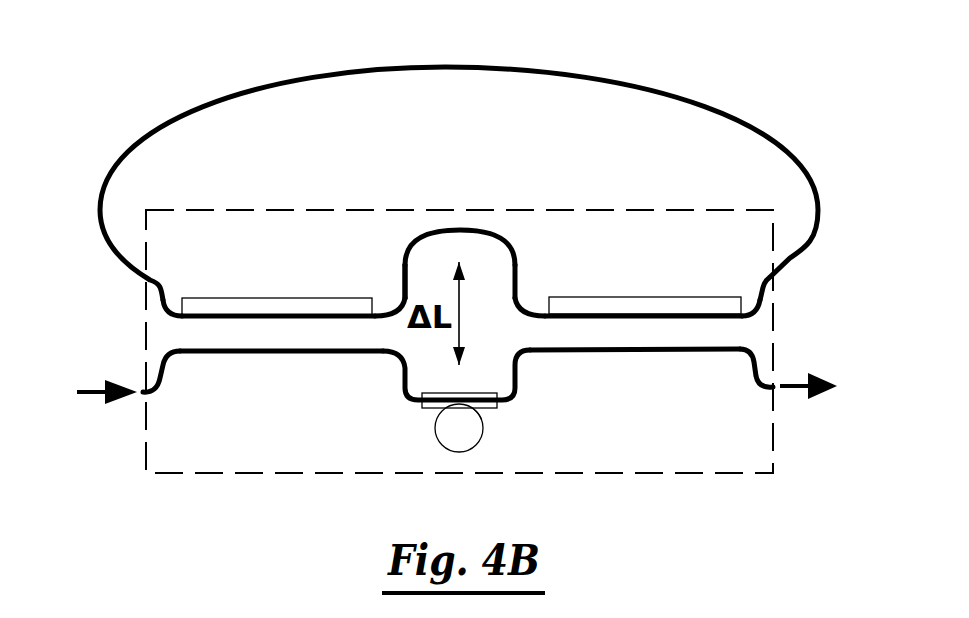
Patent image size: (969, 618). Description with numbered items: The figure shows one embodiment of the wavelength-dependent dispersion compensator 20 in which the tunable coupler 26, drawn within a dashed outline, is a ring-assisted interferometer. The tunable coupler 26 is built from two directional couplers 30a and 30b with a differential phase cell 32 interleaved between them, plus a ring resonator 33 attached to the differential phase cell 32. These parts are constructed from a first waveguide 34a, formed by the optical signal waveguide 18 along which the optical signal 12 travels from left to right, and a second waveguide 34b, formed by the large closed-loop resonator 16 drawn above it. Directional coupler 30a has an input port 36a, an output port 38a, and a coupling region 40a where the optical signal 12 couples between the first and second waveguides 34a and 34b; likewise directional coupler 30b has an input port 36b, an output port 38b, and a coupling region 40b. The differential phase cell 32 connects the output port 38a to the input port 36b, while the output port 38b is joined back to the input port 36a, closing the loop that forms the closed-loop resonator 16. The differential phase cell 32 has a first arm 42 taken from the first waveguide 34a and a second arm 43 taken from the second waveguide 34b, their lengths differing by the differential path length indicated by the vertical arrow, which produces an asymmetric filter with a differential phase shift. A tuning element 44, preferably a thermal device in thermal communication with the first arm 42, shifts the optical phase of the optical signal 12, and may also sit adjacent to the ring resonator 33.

The optical signal 12 is at (92, 387).
The closed-loop resonator 16 is at (782, 143).
The optical signal waveguide 18 is at (160, 392).
The wavelength-dependent dispersion compensator 20 is at (763, 72).
The tunable coupler 26 is at (710, 489).
The directional coupler 30a is at (247, 386).
The directional coupler 30b is at (638, 376).
The differential phase cell 32 is at (528, 251).
The ring resonator 33 is at (443, 447).
The first waveguide 34a is at (408, 397).
The second waveguide 34b is at (395, 296).
The input port 36a is at (170, 298).
The input port 36b is at (530, 302).
The output port 38a is at (397, 295).
The output port 38b is at (750, 296).
The coupling region 40a is at (262, 297).
The coupling region 40b is at (645, 295).
The first arm 42 is at (512, 390).
The second arm 43 is at (482, 229).
The tuning element 44 is at (483, 410).